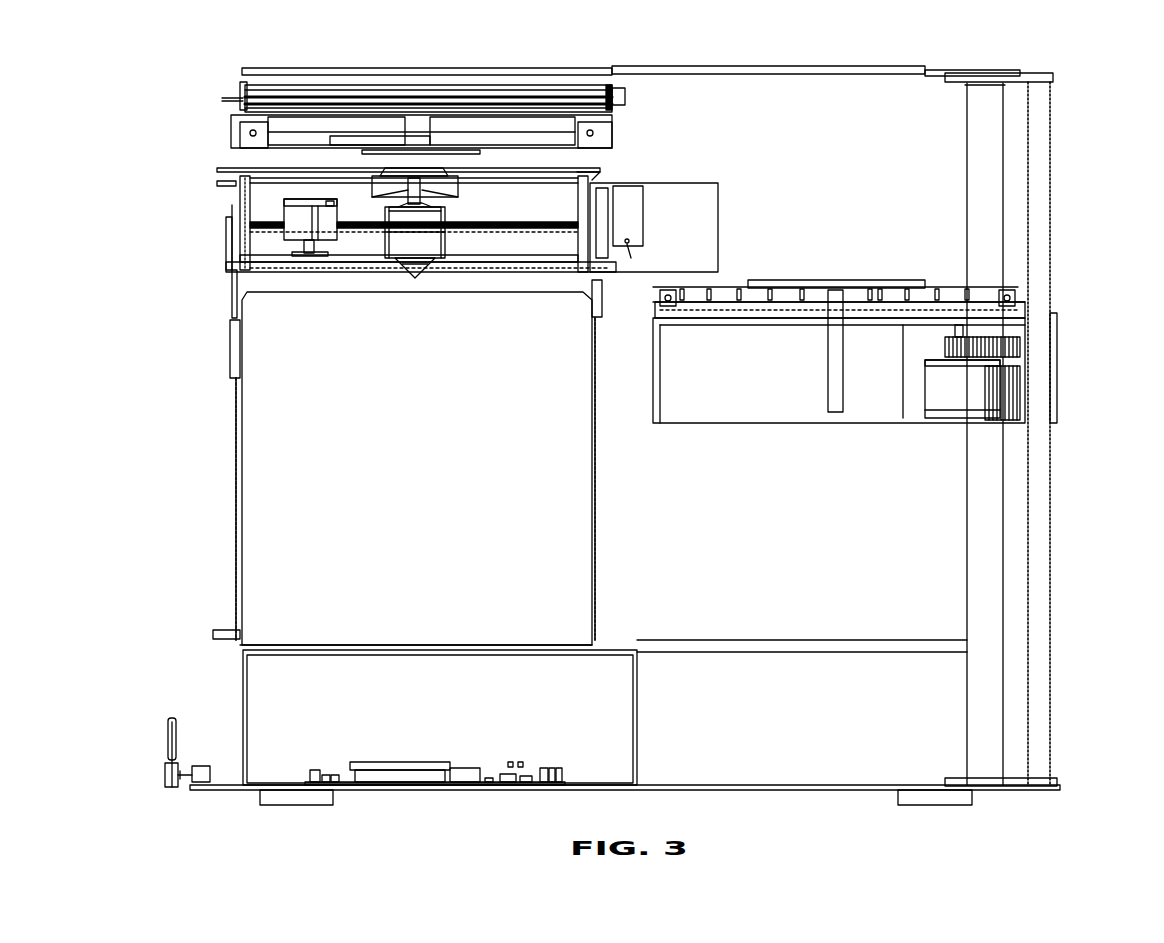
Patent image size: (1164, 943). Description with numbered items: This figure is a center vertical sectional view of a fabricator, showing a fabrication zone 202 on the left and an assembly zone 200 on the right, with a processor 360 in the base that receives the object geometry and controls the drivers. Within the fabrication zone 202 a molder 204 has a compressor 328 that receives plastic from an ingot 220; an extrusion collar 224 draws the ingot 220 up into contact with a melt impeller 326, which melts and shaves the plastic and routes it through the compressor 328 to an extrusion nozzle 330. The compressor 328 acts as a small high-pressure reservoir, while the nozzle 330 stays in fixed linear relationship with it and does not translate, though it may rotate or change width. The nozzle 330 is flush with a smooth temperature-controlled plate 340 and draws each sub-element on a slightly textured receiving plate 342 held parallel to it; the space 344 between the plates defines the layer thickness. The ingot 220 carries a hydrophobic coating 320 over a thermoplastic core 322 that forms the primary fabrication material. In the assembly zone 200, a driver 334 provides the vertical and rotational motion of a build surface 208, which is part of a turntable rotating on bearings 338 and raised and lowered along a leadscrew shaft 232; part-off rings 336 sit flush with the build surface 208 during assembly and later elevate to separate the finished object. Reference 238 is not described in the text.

The assembly zone 200 is at (866, 168).
The fabrication zone 202 is at (210, 183).
The molder 204 is at (258, 205).
The build surface 208 is at (913, 293).
The ingot 220 is at (236, 522).
The extrusion collar 224 is at (597, 290).
The leadscrew shaft 232 is at (1052, 183).
The left column texture 238 is at (234, 440).
The hydrophobic coating 320 is at (597, 486).
The core 322 is at (565, 543).
The melt impeller 326 is at (512, 260).
The compressor 328 is at (402, 242).
The extrusion nozzle 330 is at (415, 172).
The driver 334 is at (942, 412).
The part-off rings 336 is at (802, 288).
The bearings 338 is at (655, 302).
The temperature-controlled plate 340 is at (565, 167).
The receiving plate 342 is at (518, 137).
The space 344 is at (253, 162).
The processor 360 is at (378, 777).